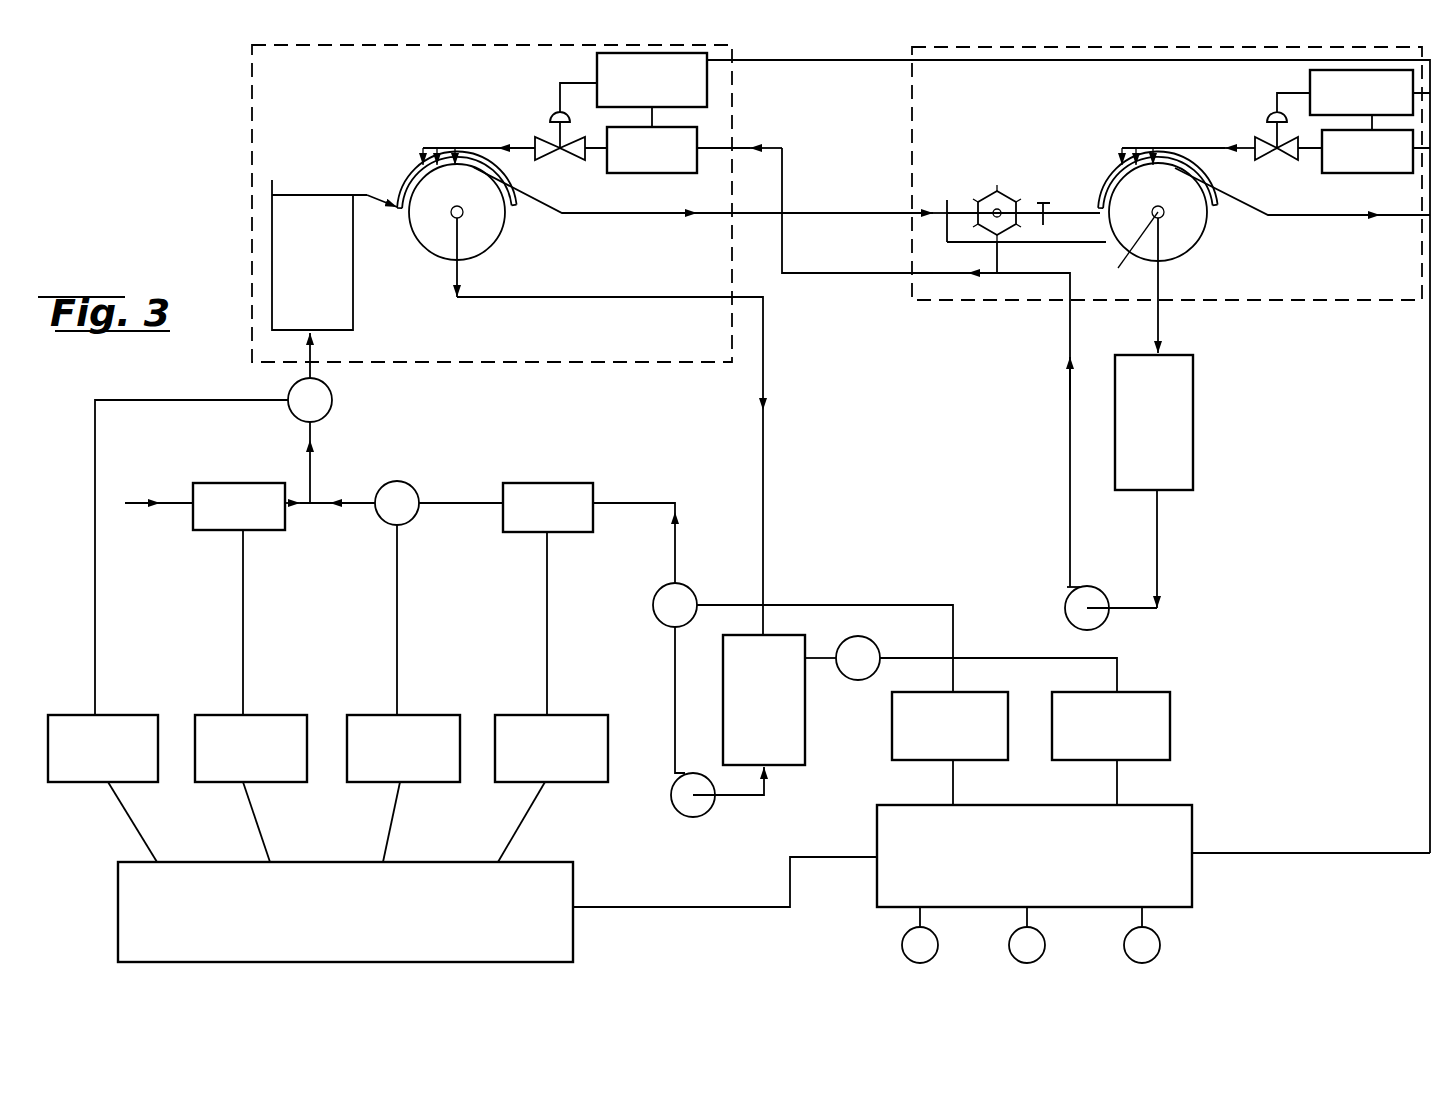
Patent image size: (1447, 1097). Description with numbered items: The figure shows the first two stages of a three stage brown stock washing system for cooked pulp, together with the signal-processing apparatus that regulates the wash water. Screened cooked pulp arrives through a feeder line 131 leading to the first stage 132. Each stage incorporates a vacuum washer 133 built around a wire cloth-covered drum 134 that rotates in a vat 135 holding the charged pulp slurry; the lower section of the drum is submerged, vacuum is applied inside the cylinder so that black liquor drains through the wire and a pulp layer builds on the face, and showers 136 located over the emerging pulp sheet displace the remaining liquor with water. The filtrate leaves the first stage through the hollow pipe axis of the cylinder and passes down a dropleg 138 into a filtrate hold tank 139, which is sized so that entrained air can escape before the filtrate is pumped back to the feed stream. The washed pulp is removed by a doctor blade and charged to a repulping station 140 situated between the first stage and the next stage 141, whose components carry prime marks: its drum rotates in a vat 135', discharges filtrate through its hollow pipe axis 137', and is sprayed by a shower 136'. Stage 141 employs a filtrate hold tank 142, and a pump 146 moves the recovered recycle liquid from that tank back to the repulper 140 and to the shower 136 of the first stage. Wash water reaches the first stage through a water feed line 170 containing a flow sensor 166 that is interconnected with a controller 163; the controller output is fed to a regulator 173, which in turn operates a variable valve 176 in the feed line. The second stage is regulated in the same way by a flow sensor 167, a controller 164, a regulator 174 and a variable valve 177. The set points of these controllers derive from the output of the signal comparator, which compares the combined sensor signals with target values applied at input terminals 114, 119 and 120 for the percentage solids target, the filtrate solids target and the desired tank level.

The first stage 132 is at (250, 140).
The vacuum washer 133 is at (410, 188).
The wire cloth-covered drum 134 is at (508, 228).
The vat 135 is at (470, 217).
The showers 136 is at (479, 127).
The dropleg 138 is at (452, 300).
The controller 163 is at (670, 98).
The flow sensor 166 is at (628, 173).
The water feed line 170 is at (784, 184).
The regulator 173 is at (550, 120).
The variable valve 176 is at (566, 158).
The stage 141 is at (908, 141).
The repulping station 140 is at (960, 202).
The filtrate hold tank 142 is at (1195, 433).
The pump 146 is at (1088, 603).
The vat 135' is at (1191, 211).
The shower 136' is at (1188, 131).
The hollow pipe axis 137' is at (1249, 219).
The controller 164 is at (1313, 92).
The flow sensor 167 is at (1340, 173).
The regulator 174 is at (1272, 114).
The variable valve 177 is at (1265, 160).
The feeder line 131 is at (178, 503).
The filtrate hold tank 139 is at (808, 724).
The input terminal 114 is at (918, 916).
The terminal 119 is at (1027, 916).
The reference input LT 120 is at (1142, 916).